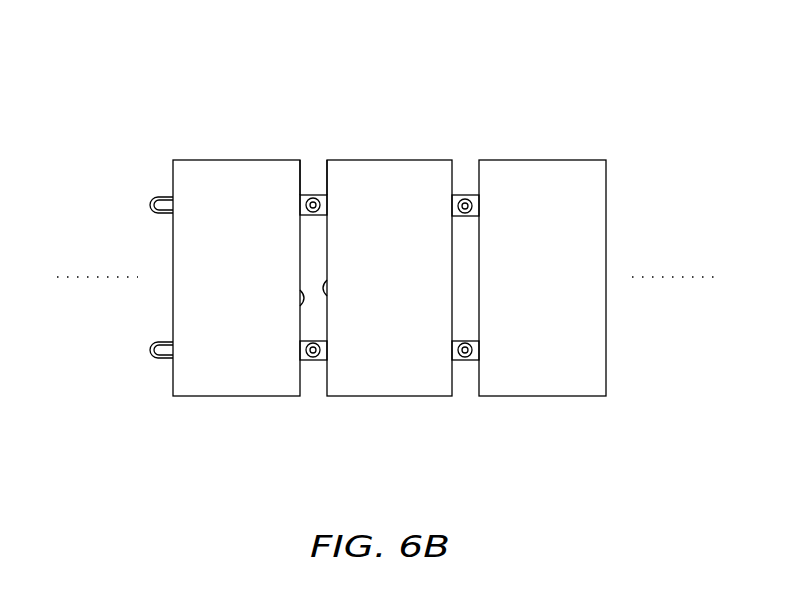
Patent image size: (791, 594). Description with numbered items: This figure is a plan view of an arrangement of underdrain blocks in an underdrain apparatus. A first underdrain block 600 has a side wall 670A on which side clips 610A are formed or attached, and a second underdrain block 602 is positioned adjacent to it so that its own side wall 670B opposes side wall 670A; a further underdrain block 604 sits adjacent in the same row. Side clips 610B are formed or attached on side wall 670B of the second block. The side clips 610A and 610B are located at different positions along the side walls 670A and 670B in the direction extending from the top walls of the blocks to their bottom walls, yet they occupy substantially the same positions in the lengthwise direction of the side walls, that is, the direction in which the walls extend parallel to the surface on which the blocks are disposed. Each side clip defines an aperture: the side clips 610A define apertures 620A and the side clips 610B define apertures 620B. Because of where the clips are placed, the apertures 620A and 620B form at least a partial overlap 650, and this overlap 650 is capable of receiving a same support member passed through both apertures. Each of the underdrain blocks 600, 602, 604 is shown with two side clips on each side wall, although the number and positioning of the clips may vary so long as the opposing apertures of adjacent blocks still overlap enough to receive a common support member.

The first underdrain block 600 is at (185, 70).
The second underdrain block 602 is at (412, 70).
The underdrain block 604 is at (581, 70).
The side clips 610A is at (302, 194).
The side clips 610B is at (326, 194).
The apertures 620A is at (300, 203).
The apertures 620B is at (327, 203).
The overlap 650 is at (312, 212).
The side wall 670A is at (300, 292).
The side wall 670B is at (323, 281).